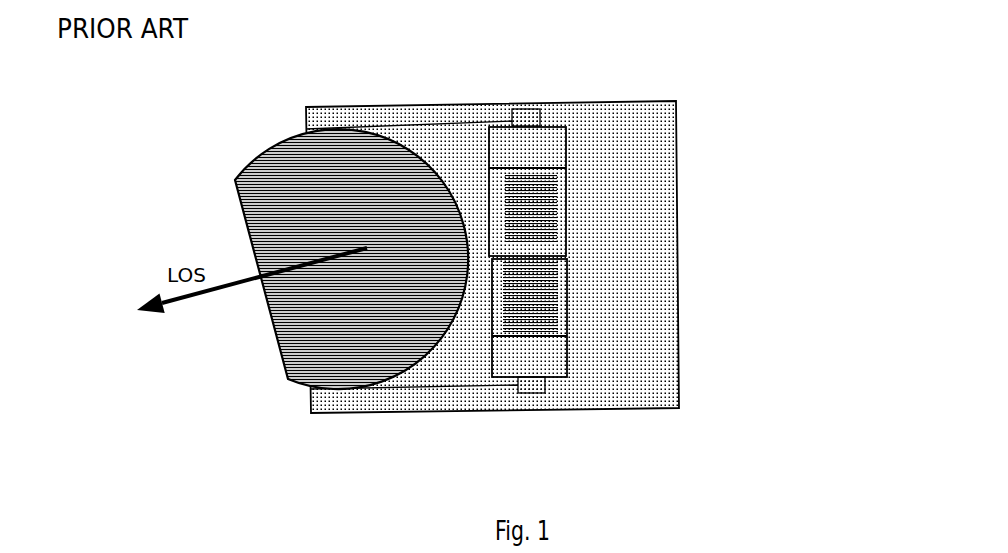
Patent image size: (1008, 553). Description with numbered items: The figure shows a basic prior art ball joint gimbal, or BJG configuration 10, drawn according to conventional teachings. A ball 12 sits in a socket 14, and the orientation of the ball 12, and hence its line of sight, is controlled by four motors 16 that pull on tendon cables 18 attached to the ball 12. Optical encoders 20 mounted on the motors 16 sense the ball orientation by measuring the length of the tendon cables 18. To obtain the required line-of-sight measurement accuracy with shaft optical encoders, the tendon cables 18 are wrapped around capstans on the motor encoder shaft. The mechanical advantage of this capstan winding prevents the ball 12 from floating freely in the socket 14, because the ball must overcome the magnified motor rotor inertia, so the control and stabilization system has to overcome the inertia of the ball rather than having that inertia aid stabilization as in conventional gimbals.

The BJG configuration 10 is at (747, 42).
The ball 12 is at (273, 173).
The socket 14 is at (330, 112).
The motors 16 is at (553, 157).
The tendon cables 18 is at (438, 122).
The optical encoders 20 is at (538, 195).